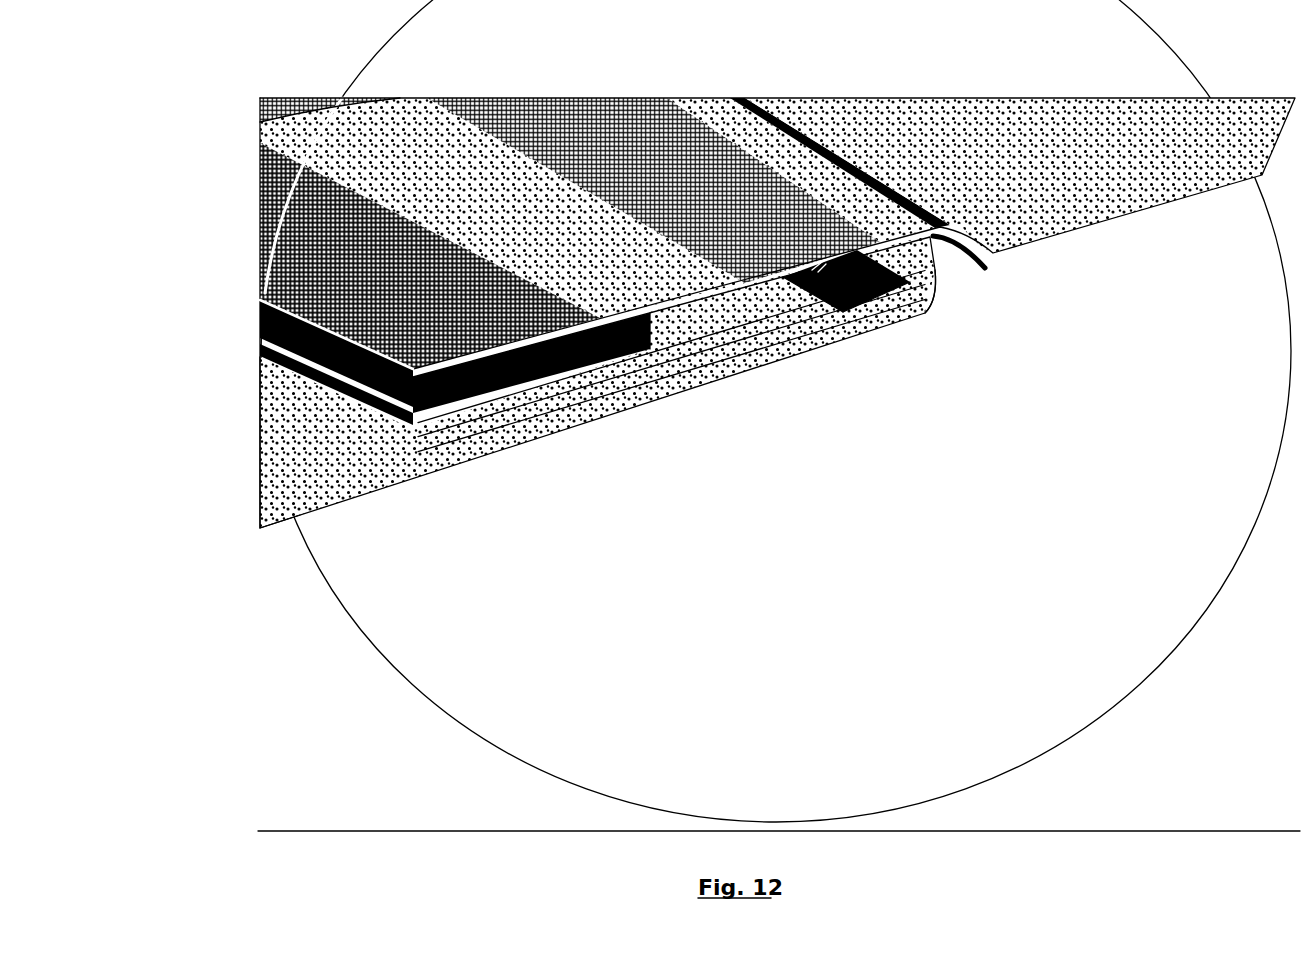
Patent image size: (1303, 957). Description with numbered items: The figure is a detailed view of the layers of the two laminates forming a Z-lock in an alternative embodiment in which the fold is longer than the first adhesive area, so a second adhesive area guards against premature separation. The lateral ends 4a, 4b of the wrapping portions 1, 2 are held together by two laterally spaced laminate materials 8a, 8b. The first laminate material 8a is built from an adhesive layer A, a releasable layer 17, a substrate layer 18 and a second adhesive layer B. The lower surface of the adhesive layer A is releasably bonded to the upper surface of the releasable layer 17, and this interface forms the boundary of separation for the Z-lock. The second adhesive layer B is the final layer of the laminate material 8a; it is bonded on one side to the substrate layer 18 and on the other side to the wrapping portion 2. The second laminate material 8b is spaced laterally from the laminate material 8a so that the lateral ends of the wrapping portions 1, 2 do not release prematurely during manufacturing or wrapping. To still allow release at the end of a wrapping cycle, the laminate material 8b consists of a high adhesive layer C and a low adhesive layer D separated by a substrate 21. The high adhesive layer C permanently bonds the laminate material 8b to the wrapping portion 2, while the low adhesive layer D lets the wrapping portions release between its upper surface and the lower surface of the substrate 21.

The lateral end 4b is at (423, 113).
The lateral end 4a is at (722, 327).
The wrapping portion 1 is at (1077, 217).
The wrapping portion 2 is at (250, 517).
The laminate material 8a is at (362, 430).
The laminate material 8b is at (898, 253).
The substrate layer 18 is at (434, 434).
The substrate 21 is at (914, 288).
The releasable layer 17 is at (580, 386).
The adhesive layer A is at (630, 344).
The second adhesive layer B is at (528, 412).
The high adhesive layer C is at (805, 272).
The low adhesive layer D is at (858, 303).